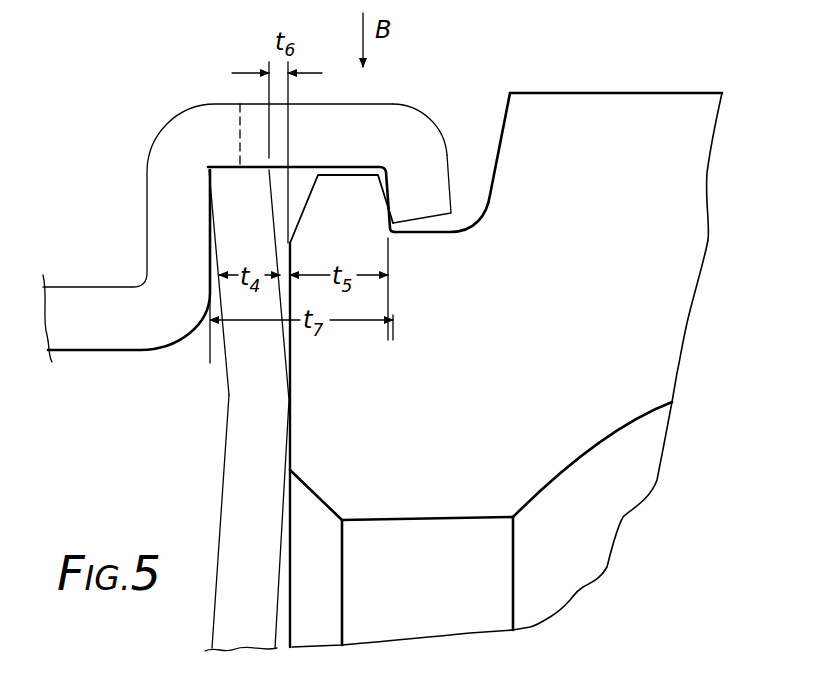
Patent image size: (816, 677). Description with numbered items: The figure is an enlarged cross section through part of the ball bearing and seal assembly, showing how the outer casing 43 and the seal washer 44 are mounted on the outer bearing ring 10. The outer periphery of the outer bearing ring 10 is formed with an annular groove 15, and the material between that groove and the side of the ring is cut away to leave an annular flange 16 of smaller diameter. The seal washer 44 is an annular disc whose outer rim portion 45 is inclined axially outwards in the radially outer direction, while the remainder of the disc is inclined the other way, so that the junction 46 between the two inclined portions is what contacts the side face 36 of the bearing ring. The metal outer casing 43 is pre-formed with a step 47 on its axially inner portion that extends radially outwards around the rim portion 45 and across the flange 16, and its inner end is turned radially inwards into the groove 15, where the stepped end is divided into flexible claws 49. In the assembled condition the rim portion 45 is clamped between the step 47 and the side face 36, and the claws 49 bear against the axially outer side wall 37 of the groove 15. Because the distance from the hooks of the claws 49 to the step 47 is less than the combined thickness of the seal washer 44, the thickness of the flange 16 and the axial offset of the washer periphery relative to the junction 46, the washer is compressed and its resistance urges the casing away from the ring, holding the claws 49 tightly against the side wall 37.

The outer bearing ring 10 is at (552, 115).
The annular groove 15 is at (467, 218).
The annular flange 16 is at (343, 190).
The side face of the outer bearing ring 36 is at (290, 297).
The axially outer side wall of the groove 37 is at (382, 193).
The outer casing 43 is at (70, 286).
The seal washer 44 is at (225, 445).
The outer rim portion 45 is at (235, 213).
The junction 46 is at (265, 381).
The step 47 is at (147, 171).
The flexible claws 49 is at (411, 135).